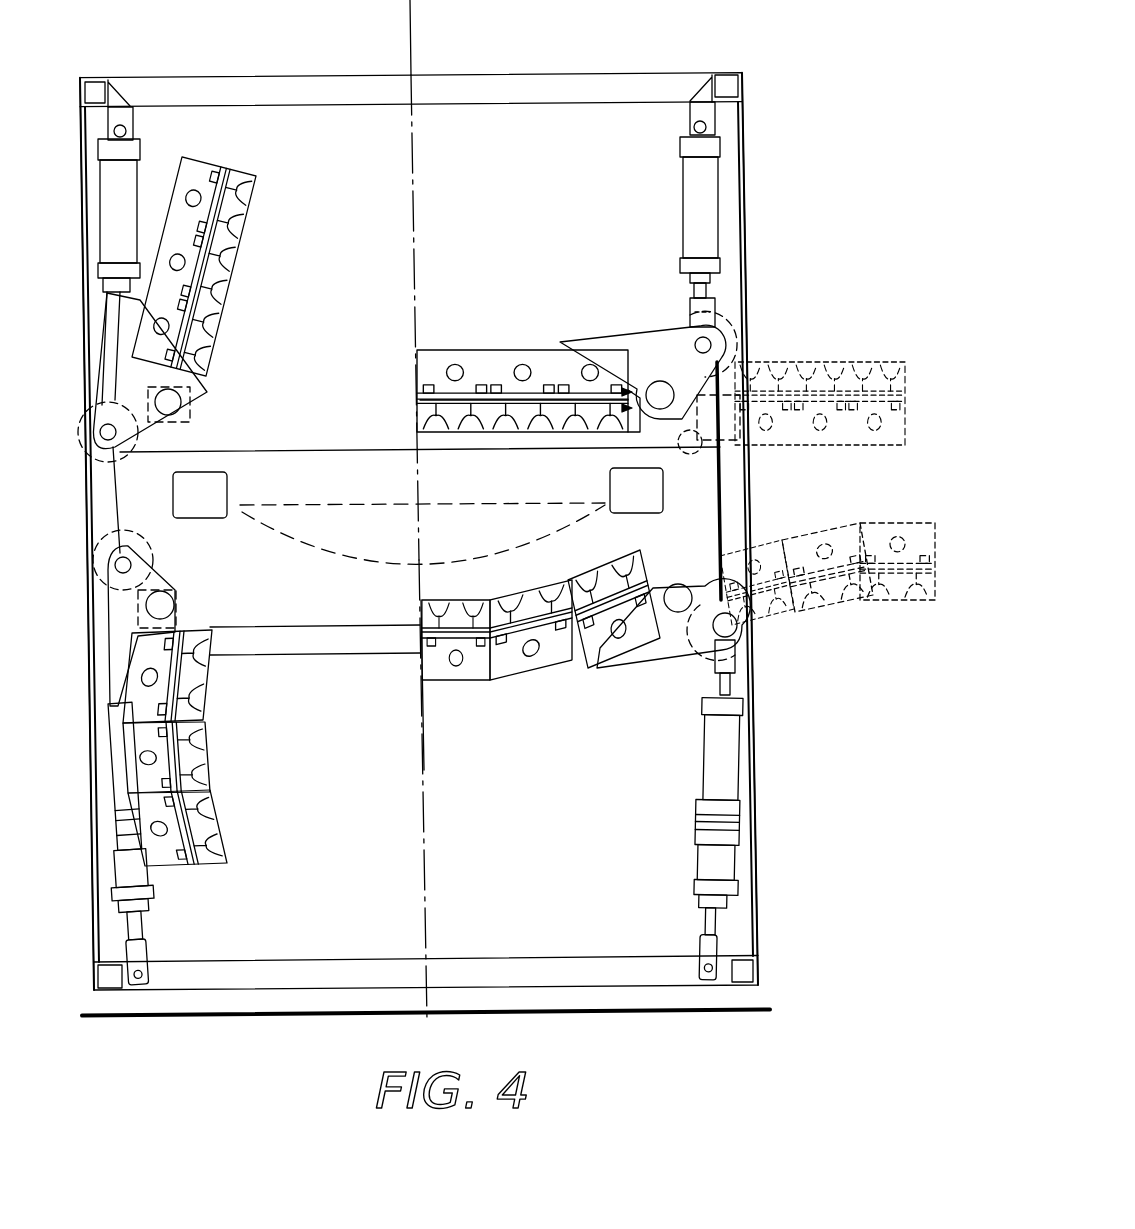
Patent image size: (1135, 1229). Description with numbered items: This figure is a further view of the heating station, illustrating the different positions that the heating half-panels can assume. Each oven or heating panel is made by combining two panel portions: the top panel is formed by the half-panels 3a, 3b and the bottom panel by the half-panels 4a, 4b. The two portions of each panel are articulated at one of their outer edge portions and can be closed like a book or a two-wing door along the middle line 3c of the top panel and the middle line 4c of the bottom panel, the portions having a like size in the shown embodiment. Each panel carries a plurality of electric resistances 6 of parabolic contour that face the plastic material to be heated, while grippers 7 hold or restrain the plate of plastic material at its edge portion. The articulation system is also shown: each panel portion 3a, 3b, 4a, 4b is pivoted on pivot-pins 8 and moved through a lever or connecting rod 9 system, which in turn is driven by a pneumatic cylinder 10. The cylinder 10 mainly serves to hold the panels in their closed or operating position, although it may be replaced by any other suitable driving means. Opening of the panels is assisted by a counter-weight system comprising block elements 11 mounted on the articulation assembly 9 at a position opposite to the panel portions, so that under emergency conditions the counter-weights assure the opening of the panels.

The half-panel of top panel 3a is at (234, 165).
The half-panel of top panel 3b is at (488, 388).
The middle line of top panel 3c is at (424, 59).
The half-panel of bottom panel 4a is at (163, 862).
The half-panel of bottom panel 4b is at (488, 676).
The middle line of bottom panel 4c is at (428, 870).
The electric resistances 6 is at (420, 412).
The grippers 7 is at (655, 490).
The pivot-pins 8 is at (662, 383).
The lever or connecting rod 9 is at (667, 646).
The pneumatic cylinder 10 is at (714, 851).
The block elements 11 is at (706, 343).